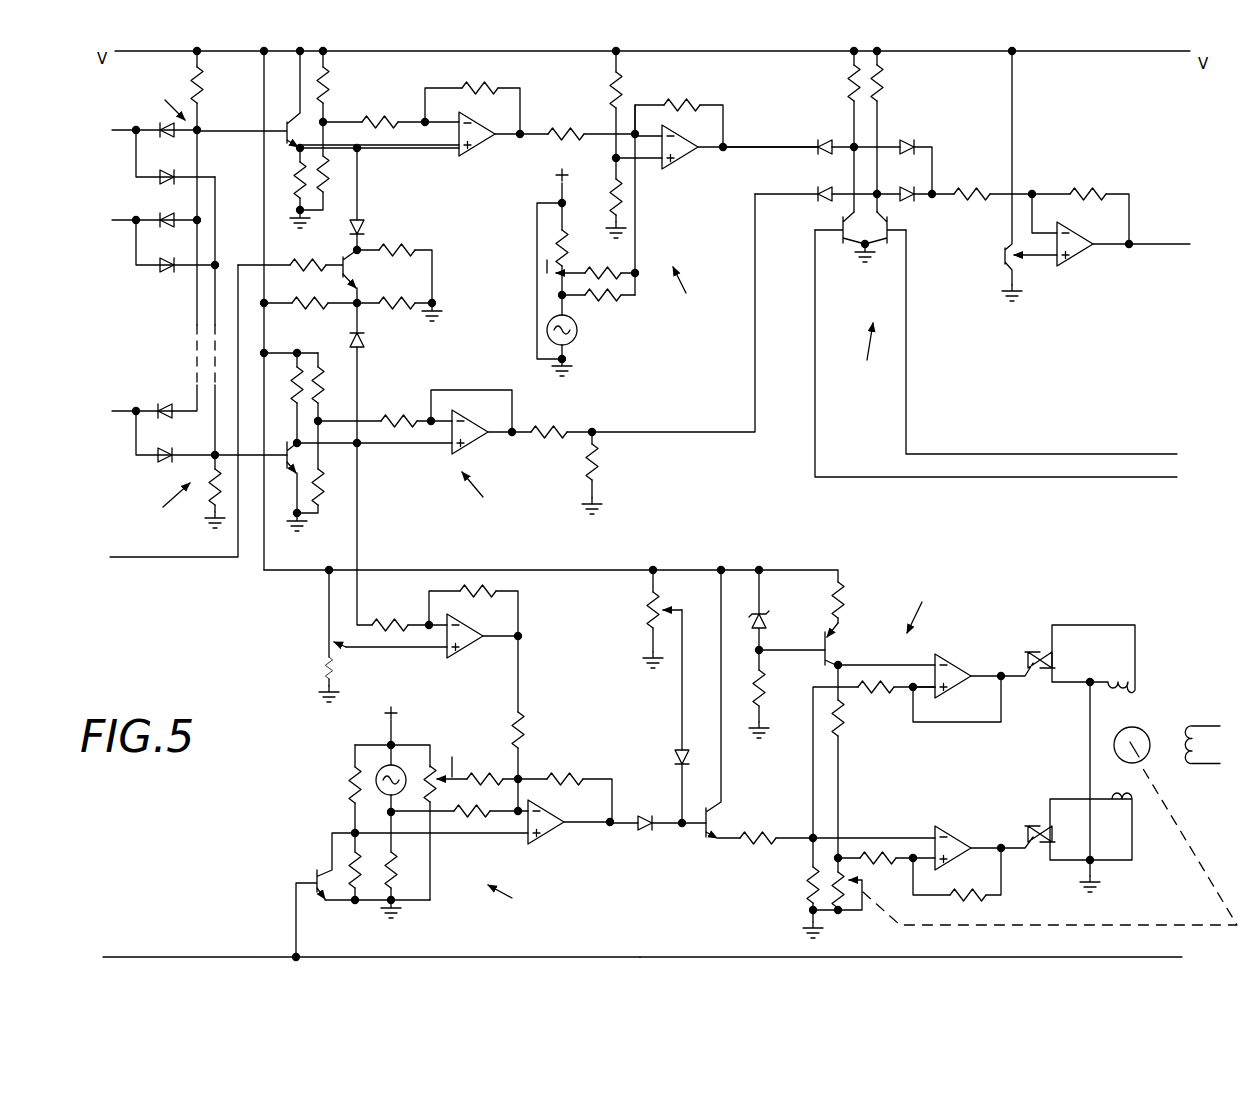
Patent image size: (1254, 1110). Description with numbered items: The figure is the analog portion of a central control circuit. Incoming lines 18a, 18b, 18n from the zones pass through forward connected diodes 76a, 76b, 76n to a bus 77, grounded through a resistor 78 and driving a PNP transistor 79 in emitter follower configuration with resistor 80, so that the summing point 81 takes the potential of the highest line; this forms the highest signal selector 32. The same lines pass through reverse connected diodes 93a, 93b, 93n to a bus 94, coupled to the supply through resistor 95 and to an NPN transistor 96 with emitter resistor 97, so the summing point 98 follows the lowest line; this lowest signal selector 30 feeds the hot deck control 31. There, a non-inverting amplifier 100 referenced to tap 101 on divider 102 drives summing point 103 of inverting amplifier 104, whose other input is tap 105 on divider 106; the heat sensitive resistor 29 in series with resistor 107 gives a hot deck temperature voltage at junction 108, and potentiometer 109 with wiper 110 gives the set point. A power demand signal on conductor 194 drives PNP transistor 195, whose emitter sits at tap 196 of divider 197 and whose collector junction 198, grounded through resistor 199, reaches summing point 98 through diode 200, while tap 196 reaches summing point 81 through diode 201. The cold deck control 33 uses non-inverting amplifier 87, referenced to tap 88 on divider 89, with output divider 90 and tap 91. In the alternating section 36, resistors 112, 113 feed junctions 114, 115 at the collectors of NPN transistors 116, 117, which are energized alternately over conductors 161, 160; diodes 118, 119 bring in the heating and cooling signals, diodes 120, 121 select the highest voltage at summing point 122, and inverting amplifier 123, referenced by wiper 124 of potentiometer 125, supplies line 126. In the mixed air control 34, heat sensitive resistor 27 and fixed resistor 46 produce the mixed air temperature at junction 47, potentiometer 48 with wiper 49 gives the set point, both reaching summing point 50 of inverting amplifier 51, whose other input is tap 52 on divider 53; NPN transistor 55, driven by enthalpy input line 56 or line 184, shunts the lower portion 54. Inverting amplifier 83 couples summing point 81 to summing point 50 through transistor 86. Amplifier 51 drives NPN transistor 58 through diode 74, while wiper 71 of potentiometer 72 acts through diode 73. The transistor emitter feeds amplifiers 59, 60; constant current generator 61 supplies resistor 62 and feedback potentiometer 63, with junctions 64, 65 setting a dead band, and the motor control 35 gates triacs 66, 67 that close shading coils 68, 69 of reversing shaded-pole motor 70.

The incoming line 18a is at (124, 134).
The incoming line 18b is at (123, 221).
The incoming line 18n is at (125, 412).
The reverse connected diode 93a is at (179, 137).
The reverse connected diode 93b is at (168, 236).
The reverse connected diode 93n is at (160, 407).
The forward connected diode 76a is at (158, 176).
The forward connected diode 76b is at (158, 266).
The forward connected diode 76n is at (158, 462).
The input diode network 30 is at (161, 102).
The bus 94 is at (200, 157).
The resistor 95 is at (205, 85).
The bus 77 is at (216, 244).
The resistor 78 is at (213, 500).
The input circuit 32 is at (161, 508).
The conductor 194 is at (140, 557).
The NPN transistor 96 is at (289, 120).
The resistor 97 is at (299, 185).
The summing point 98 is at (360, 150).
The fixed tap 101 is at (328, 120).
The voltage divider 102 is at (330, 97).
The non-inverting amplifier 100 is at (472, 150).
The summing point 103 is at (636, 132).
The voltage divider 106 is at (612, 120).
The fixed tap 105 is at (612, 158).
The inverting amplifier 104 is at (678, 154).
The fixed resistor 107 is at (568, 245).
The potentiometer 109 is at (548, 270).
The wiper 110 is at (550, 280).
The junction 108 is at (572, 300).
The heat sensitive resistor 29 is at (578, 342).
The hot deck control 31 is at (691, 292).
The diode 200 is at (365, 223).
The junction 198 is at (365, 250).
The PNP transistor 195 is at (297, 268).
The resistor 199 is at (402, 246).
The tap 196 is at (362, 300).
The voltage divider 197 is at (330, 310).
The diode 201 is at (365, 342).
The resistor 80 is at (290, 397).
The fixed tap 88 is at (322, 410).
The PNP transistor 79 is at (288, 470).
The summing point 81 is at (357, 450).
The voltage divider 89 is at (322, 468).
The non-inverting amplifier 87 is at (450, 452).
The amplifier circuit 33 is at (483, 495).
The output voltage divider 90 is at (580, 447).
The fixed tap 91 is at (594, 430).
The resistor 112 is at (853, 85).
The resistor 113 is at (882, 90).
The reverse connected diode 118 is at (818, 140).
The junction 114 is at (848, 152).
The diode 120 is at (915, 142).
The reverse connected diode 119 is at (820, 200).
The junction 115 is at (880, 190).
The diode 121 is at (912, 200).
The summing point 122 is at (938, 192).
The NPN transistor 116 is at (822, 243).
The NPN transistor 117 is at (888, 243).
The conductor 160 is at (1052, 454).
The conductor 161 is at (1037, 478).
The switching circuit 36 is at (860, 353).
The inverting amplifier 123 is at (1095, 258).
The line 126 is at (1171, 244).
The potentiometer 125 is at (1000, 258).
The wiper 124 is at (1035, 257).
The constant current generator 61 is at (818, 561).
The wiper 71 is at (668, 610).
The minimum outdoor air set point potentiometer 72 is at (647, 607).
The diode 73 is at (686, 747).
The diode 74 is at (653, 833).
The NPN transistor 58 is at (707, 843).
The junction 65 is at (840, 662).
The fixed resistor 62 is at (846, 732).
The junction 64 is at (842, 855).
The feedback potentiometer 63 is at (852, 880).
The control circuit 35 is at (924, 608).
The positive feedback non-inverting amplifier 60 is at (962, 664).
The positive feedback inverting amplifier 59 is at (960, 837).
The triac 67 is at (1042, 650).
The triac 66 is at (1038, 827).
The shading coil 69 is at (1123, 682).
The shading coil 68 is at (1125, 800).
The reversing shaded-pole motor 70 is at (1188, 678).
The line 184 is at (1050, 958).
The inverting amplifier 83 is at (472, 645).
The transistor 86 is at (353, 648).
The summing point 50 is at (520, 778).
The wiper 49 is at (477, 761).
The inverting amplifier 51 is at (547, 837).
The heat sensitive resistor 27 is at (394, 770).
The potentiometer 48 is at (426, 796).
The junction 47 is at (444, 806).
The voltage divider 53 is at (350, 805).
The fixed tap 52 is at (352, 833).
The lower portion 54 is at (364, 868).
The fixed resistor 46 is at (377, 865).
The NPN transistor 55 is at (320, 893).
The enthalpy input line 56 is at (220, 957).
The mixed air control 34 is at (512, 900).